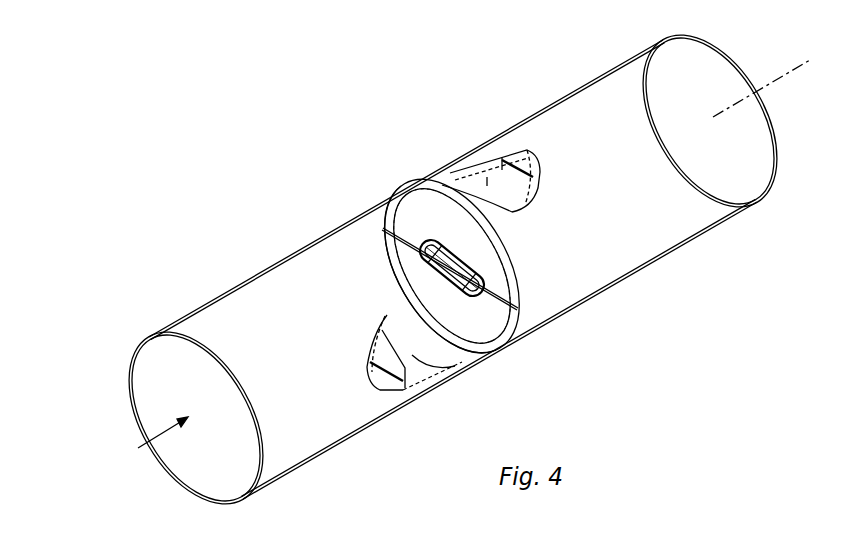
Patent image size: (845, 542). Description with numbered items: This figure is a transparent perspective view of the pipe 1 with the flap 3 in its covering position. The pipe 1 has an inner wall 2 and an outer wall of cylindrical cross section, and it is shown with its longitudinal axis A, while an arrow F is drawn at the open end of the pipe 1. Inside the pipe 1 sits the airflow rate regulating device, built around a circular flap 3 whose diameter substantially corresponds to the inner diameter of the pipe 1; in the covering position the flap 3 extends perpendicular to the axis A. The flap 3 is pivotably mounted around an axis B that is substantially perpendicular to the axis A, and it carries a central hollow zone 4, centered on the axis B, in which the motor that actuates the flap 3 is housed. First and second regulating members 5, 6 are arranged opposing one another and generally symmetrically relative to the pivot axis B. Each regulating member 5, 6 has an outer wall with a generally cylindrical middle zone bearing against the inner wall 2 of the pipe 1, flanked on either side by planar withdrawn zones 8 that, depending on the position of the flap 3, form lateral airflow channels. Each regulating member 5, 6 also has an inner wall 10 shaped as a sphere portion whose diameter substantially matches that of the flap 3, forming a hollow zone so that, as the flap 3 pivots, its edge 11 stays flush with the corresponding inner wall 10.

The pipe 1 is at (245, 312).
The inner wall 2 is at (152, 387).
The circular flap 3 is at (492, 278).
The central hollow zone 4 is at (430, 268).
The first regulating member 5 is at (412, 383).
The second regulating member 6 is at (483, 160).
The withdrawn zones 8 is at (517, 215).
The inner wall 10 is at (408, 328).
The edge 11 is at (517, 328).
The axis of the pipe A is at (761, 82).
The pivot axis B is at (383, 230).
The flow direction F is at (163, 432).